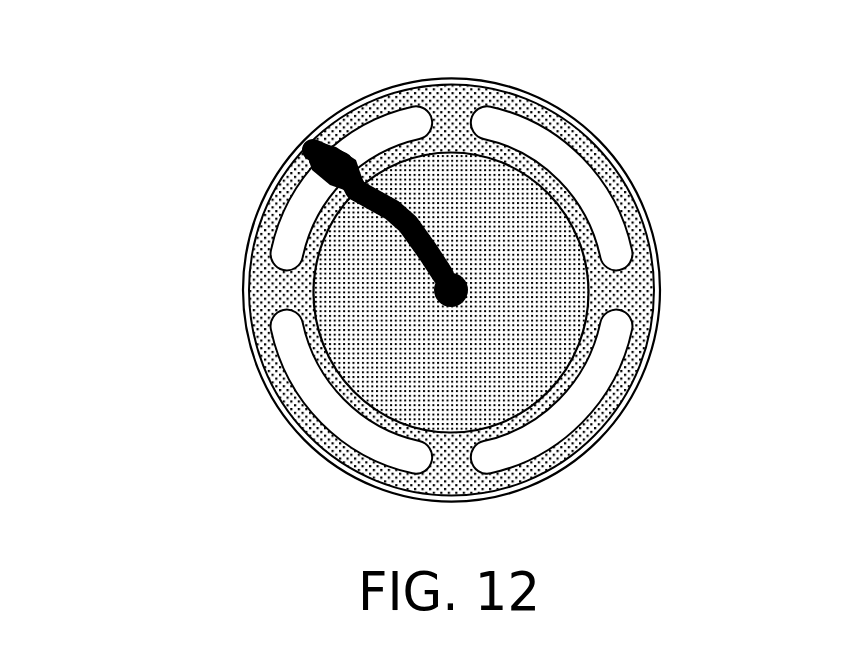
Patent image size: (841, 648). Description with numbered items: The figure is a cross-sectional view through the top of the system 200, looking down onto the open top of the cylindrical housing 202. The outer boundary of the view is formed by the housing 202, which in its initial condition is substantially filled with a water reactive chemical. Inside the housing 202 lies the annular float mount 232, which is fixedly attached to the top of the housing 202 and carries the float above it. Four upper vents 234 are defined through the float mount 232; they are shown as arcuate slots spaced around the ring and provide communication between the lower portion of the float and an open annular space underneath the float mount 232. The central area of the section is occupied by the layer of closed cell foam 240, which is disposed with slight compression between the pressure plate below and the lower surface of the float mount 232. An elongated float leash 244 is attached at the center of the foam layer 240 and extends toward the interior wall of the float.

The system 200 is at (396, 271).
The housing 202 is at (655, 229).
The annular float mount 232 is at (486, 98).
The upper vents 234 is at (566, 160).
The layer of closed cell foam 240 is at (548, 296).
The float leash 244 is at (341, 158).